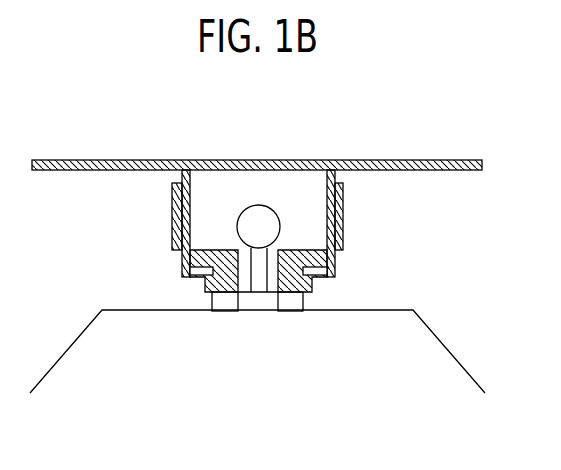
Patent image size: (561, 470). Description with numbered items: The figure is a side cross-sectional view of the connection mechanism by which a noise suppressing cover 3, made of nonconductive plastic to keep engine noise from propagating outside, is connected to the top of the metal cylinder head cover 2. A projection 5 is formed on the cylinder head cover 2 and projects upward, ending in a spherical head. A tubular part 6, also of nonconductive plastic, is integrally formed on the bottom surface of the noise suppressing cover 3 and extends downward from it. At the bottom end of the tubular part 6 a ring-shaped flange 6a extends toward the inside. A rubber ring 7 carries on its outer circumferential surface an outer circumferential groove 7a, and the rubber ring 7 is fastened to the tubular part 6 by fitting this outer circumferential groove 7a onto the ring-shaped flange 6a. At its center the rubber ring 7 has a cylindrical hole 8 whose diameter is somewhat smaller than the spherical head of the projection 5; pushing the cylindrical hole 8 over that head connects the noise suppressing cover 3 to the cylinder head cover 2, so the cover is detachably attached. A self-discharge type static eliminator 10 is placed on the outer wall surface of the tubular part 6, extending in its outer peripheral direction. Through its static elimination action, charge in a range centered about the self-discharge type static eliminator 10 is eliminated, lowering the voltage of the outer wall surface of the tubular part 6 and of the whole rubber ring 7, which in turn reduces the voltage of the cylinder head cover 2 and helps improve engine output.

The cylinder head cover 2 is at (433, 358).
The noise suppressing cover 3 is at (384, 160).
The projection 5 is at (260, 227).
The tubular part 6 is at (183, 264).
The ring-shaped flange 6a is at (197, 277).
The rubber ring 7 is at (228, 278).
The outer circumferential groove 7a is at (323, 274).
The cylindrical hole 8 is at (269, 292).
The self-discharge type static eliminator 10 is at (173, 216).